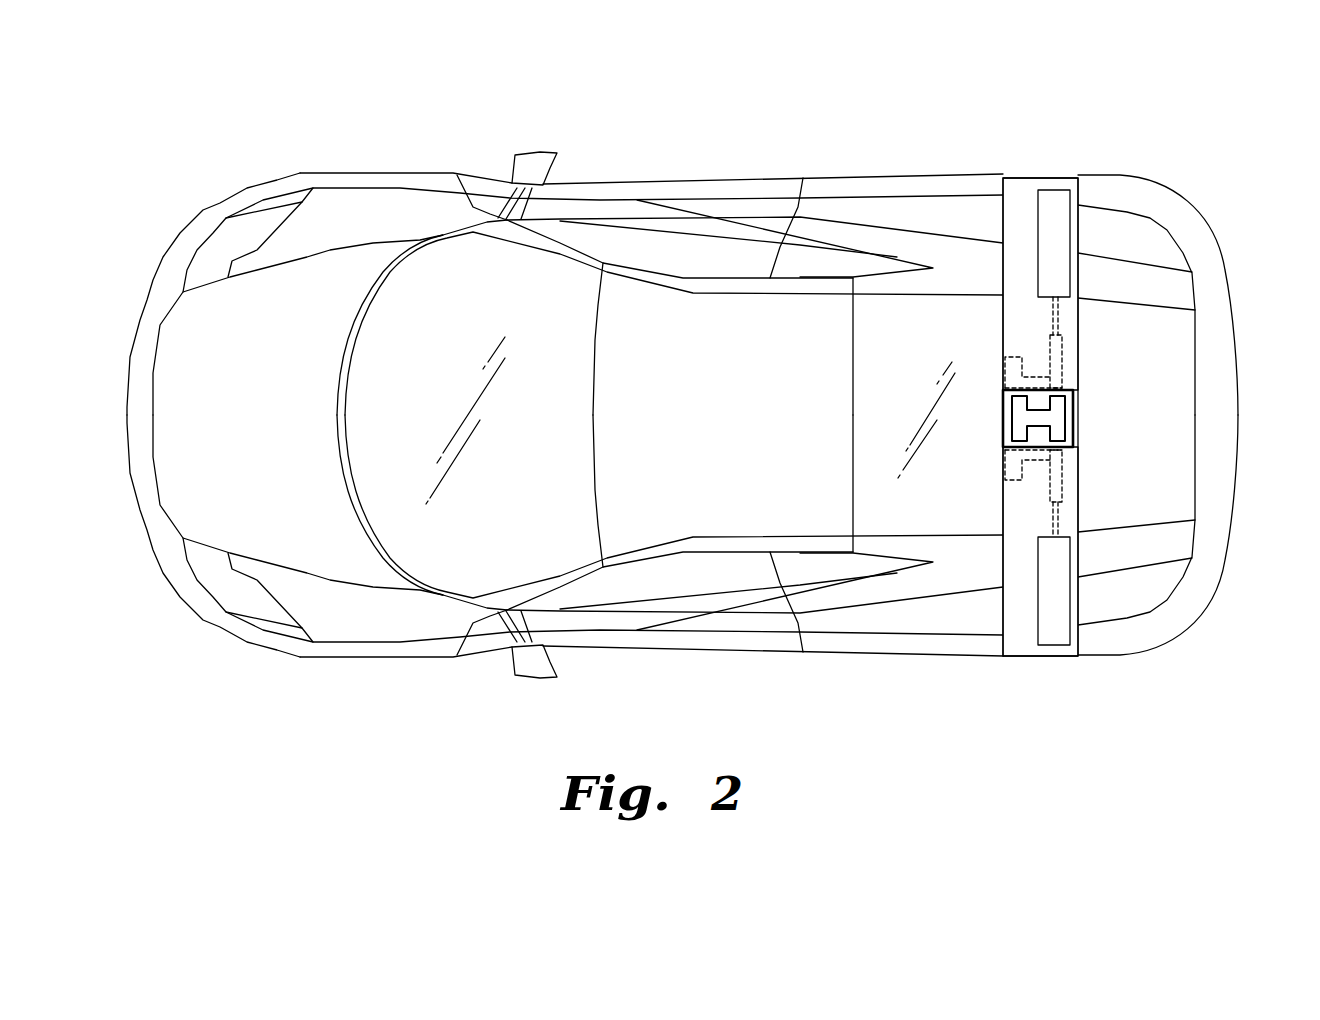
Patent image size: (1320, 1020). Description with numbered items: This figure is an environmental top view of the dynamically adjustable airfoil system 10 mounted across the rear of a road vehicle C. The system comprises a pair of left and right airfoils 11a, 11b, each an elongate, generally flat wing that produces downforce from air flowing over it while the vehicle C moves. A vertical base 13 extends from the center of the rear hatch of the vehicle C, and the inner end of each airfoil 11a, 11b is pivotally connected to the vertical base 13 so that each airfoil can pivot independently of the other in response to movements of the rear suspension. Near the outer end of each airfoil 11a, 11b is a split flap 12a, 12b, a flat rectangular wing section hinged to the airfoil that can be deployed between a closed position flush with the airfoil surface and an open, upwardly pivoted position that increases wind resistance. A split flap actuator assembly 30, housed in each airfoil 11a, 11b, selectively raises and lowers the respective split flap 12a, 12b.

The dynamically adjustable airfoil system 10 is at (998, 128).
The left airfoil 11a is at (1010, 573).
The right airfoil 11b is at (1008, 336).
The split flap 12a is at (1060, 615).
The split flap 12b is at (1063, 235).
The vertical base 13 is at (1063, 422).
The split flap actuator assembly 30 is at (1100, 350).
The road vehicle C is at (250, 696).